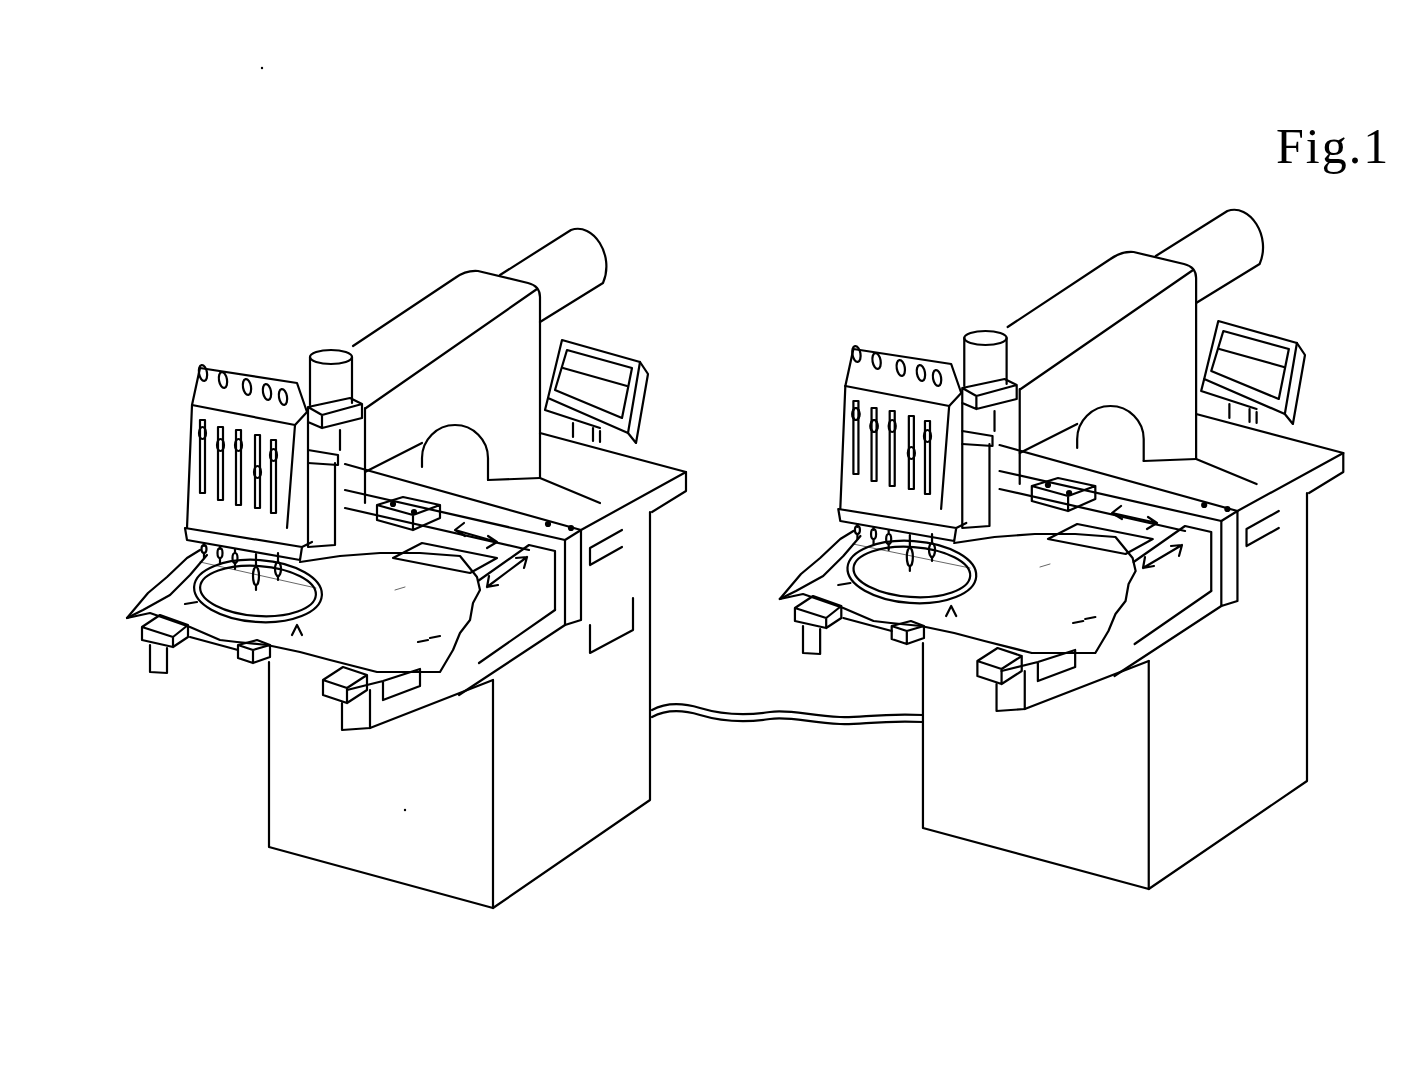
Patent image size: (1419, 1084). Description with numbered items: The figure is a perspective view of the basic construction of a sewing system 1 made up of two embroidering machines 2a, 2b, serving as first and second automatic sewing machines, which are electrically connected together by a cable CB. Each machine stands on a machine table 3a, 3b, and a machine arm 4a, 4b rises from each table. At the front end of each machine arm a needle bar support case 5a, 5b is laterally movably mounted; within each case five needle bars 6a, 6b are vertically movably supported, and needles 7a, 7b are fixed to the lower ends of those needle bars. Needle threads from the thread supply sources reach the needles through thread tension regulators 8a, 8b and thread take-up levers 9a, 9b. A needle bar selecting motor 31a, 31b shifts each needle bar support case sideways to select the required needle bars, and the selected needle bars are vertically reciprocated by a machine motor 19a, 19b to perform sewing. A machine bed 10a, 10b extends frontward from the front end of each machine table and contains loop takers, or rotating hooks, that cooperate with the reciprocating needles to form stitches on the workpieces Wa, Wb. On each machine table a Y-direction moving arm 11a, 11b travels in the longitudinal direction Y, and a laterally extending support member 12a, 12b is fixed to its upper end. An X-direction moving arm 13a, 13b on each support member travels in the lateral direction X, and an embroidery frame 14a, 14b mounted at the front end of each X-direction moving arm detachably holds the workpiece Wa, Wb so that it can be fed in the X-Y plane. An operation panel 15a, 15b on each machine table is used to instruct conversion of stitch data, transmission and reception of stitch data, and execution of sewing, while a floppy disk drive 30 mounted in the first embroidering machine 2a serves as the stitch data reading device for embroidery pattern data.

The sewing system 1 is at (733, 297).
The embroidering machine 2a is at (258, 331).
The embroidering machine 2b is at (1026, 284).
The machine table 3a is at (637, 467).
The machine table 3b is at (1297, 453).
The machine arm 4a is at (413, 325).
The machine arm 4b is at (1106, 289).
The needle bar support case 5a is at (197, 509).
The needle bar support case 5b is at (853, 492).
The needle bars 6a is at (138, 590).
The needle bars 6b is at (860, 528).
The needles 7a is at (193, 566).
The needles 7b is at (845, 545).
The thread tension regulators 8a is at (247, 375).
The thread tension regulators 8b is at (857, 352).
The thread take-up levers 9a is at (213, 463).
The thread take-up levers 9b is at (856, 413).
The machine bed 10a is at (253, 664).
The machine bed 10b is at (907, 639).
The Y-direction moving arm 11a is at (578, 602).
The Y-direction moving arm 11b is at (1237, 572).
The support member 12a is at (530, 517).
The support member 12b is at (1188, 497).
The X-direction moving arm 13a is at (412, 505).
The X-direction moving arm 13b is at (1062, 489).
The embroidery frame 14a is at (327, 577).
The embroidery frame 14b is at (975, 563).
The operation panel 15a is at (603, 356).
The operation panel 15b is at (1227, 329).
The machine motor 19a is at (538, 260).
The machine motor 19b is at (1201, 239).
The floppy disk drive 30 is at (633, 612).
The needle bar selecting motor 31a is at (321, 356).
The needle bar selecting motor 31b is at (971, 343).
The workpiece Wa is at (163, 575).
The workpiece Wb is at (812, 582).
The cable CB is at (795, 718).
The X-direction X is at (477, 533).
The Y-direction Y is at (513, 567).